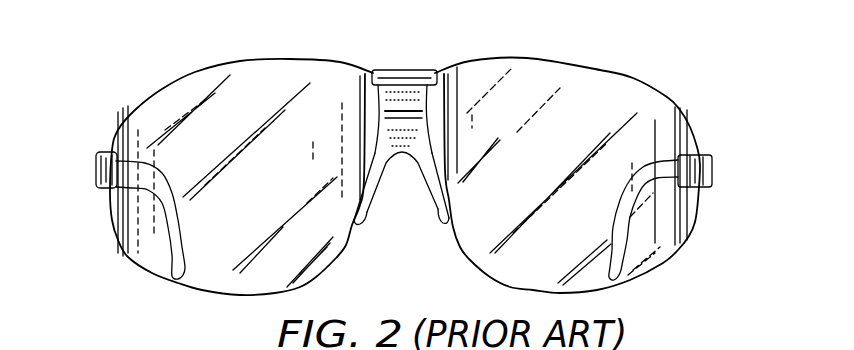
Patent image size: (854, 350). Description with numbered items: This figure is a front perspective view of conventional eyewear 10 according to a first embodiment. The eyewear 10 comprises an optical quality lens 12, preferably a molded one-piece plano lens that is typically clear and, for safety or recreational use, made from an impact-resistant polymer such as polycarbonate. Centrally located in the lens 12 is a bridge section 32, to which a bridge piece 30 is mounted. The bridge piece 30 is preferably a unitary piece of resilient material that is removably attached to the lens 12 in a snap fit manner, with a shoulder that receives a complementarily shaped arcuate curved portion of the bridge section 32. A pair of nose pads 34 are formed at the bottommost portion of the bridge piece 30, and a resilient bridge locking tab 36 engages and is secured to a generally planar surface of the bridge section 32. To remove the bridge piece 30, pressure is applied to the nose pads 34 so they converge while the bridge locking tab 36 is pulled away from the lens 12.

The eyewear 10 is at (422, 159).
The lens 12 is at (247, 78).
The bridge piece 30 is at (416, 133).
The bridge section 32 is at (425, 110).
The nose pads 34 is at (428, 193).
The bridge locking tab 36 is at (379, 72).